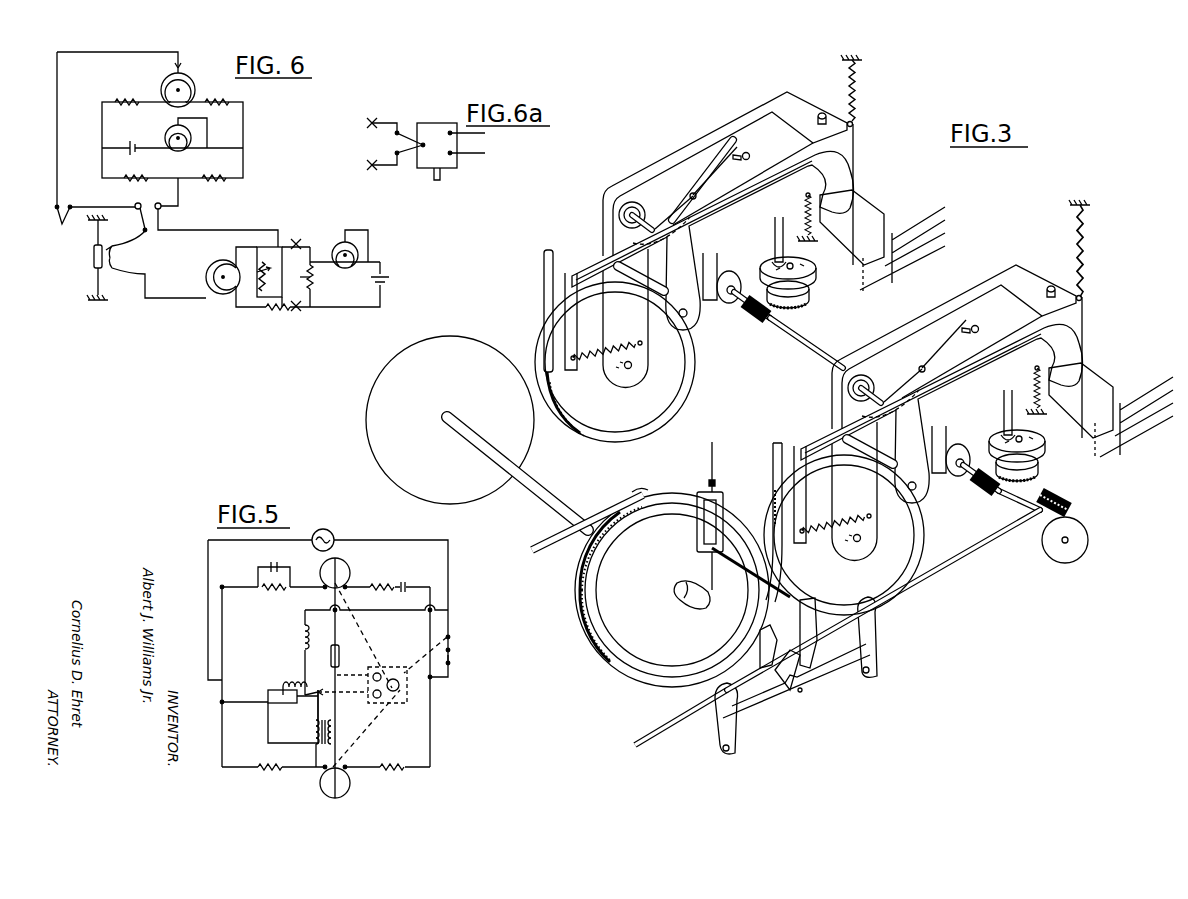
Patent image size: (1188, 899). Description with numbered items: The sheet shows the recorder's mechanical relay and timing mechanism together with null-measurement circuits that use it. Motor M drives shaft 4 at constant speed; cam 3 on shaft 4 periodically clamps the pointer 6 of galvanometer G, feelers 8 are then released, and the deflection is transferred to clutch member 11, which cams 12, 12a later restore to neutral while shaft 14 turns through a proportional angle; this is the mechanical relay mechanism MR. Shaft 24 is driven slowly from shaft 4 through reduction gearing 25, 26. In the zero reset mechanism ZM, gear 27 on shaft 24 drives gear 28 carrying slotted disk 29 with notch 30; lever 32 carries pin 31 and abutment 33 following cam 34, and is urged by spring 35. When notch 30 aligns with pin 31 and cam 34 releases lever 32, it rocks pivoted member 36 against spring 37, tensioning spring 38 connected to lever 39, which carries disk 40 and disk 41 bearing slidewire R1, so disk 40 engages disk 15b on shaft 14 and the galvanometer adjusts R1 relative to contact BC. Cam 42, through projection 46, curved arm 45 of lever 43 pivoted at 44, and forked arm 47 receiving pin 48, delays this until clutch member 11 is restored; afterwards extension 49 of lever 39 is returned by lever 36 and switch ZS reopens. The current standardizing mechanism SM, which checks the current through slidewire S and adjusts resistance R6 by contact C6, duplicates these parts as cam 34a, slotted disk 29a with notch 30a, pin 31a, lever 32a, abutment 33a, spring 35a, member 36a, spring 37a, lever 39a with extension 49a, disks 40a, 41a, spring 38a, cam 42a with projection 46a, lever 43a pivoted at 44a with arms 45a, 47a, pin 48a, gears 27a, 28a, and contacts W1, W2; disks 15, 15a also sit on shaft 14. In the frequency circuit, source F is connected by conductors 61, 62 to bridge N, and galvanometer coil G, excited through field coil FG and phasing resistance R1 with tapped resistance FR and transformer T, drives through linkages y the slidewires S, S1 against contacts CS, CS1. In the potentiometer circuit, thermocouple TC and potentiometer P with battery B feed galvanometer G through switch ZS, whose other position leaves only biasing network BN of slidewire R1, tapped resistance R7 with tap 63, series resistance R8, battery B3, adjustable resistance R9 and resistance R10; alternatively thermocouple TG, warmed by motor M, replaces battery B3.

In FIG. 6, the contact CS is at (184, 76).
In FIG. 5, the contact CS is at (347, 568).
In FIG. 3, the contact CS is at (598, 513).
In FIG. 6, the slidewire S is at (193, 91).
In FIG. 5, the slidewire S is at (322, 572).
In FIG. 3, the slidewire S is at (580, 612).
In FIG. 6, the split-circuit potentiometer P is at (194, 134).
In FIG. 6, the battery B is at (140, 152).
In FIG. 6, the thermocouple TC is at (60, 227).
In FIG. 6, the switch ZS is at (202, 227).
In FIG. 5, the switch ZS is at (461, 650).
In FIG. 3, the switch ZS is at (898, 235).
In FIG. 6, the galvanometer G is at (105, 258).
In FIG. 5, the galvanometer G is at (341, 653).
In FIG. 3, the galvanometer G is at (697, 530).
In FIG. 6, the contact BC is at (212, 292).
In FIG. 5, the contact BC is at (272, 692).
In FIG. 3, the contact BC is at (544, 264).
In FIG. 6, the biasing resistance R1 is at (225, 295).
In FIG. 5, the biasing resistance R1 is at (288, 680).
In FIG. 3, the biasing resistance R1 is at (563, 418).
In FIG. 6, the biasing network BN is at (243, 300).
In FIG. 6, the tap 63 is at (283, 277).
In FIG. 6, the tapped resistance R7 is at (266, 283).
In FIG. 6, the resistance R8 is at (296, 312).
In FIG. 6, the adjustable resistance R9 is at (339, 244).
In FIG. 6, the resistance R10 is at (323, 277).
In FIG. 6, the battery B3 is at (386, 280).
In FIG. 6A, the motor M is at (433, 123).
In FIG. 6A, the thermocouple TG is at (407, 158).
In FIG. 5, the AC source F is at (328, 532).
In FIG. 5, the conductor 61 is at (208, 580).
In FIG. 5, the conductor 62 is at (449, 592).
In FIG. 5, the frequency-responsive bridge N is at (243, 610).
In FIG. 5, the field coil FG is at (305, 626).
In FIG. 5, the pointer 6 is at (335, 656).
In FIG. 3, the pointer 6 is at (752, 572).
In FIG. 5, the resistance FR is at (293, 716).
In FIG. 5, the transformer T is at (322, 742).
In FIG. 5, the mechanical relay mechanism MR is at (390, 703).
In FIG. 3, the mechanical relay mechanism MR is at (848, 721).
In FIG. 5, the cam 3 is at (337, 702).
In FIG. 3, the cam 3 is at (780, 676).
In FIG. 5, the mechanical link y is at (362, 632).
In FIG. 5, the contact CS1 is at (328, 794).
In FIG. 5, the slidewire S1 is at (350, 790).
In FIG. 3, the zero reset mechanism ZM is at (680, 114).
In FIG. 3, the current standardizing mechanism SM is at (903, 327).
In FIG. 3, the extension 49 is at (808, 110).
In FIG. 3, the biasing spring 37 is at (856, 104).
In FIG. 3, the pivoted member 36 is at (857, 150).
In FIG. 3, the lever 32 is at (840, 172).
In FIG. 3, the cam 42 is at (629, 201).
In FIG. 3, the projection 46 is at (644, 200).
In FIG. 3, the curved arm 45 is at (622, 240).
In FIG. 3, the forked arm 47 is at (733, 137).
In FIG. 3, the pin 48 is at (750, 156).
In FIG. 3, the lever 43 is at (703, 175).
In FIG. 3, the pivot 44 is at (692, 192).
In FIG. 3, the spring 38 is at (593, 370).
In FIG. 3, the lever 39 is at (646, 332).
In FIG. 3, the disk 40 is at (638, 438).
In FIG. 3, the disk 41 is at (666, 413).
In FIG. 3, the abutment 33 is at (718, 262).
In FIG. 3, the pin 31 is at (778, 239).
In FIG. 3, the notch 30 is at (772, 266).
In FIG. 3, the cam 34 is at (729, 303).
In FIG. 3, the gear 27 is at (752, 318).
In FIG. 3, the slotted disk 29 is at (814, 268).
In FIG. 3, the gear 28 is at (805, 306).
In FIG. 3, the shaft 24 is at (1005, 500).
In FIG. 3, the spring 35 is at (814, 228).
In FIG. 3, the disk 15b is at (487, 353).
In FIG. 3, the shaft 14 is at (538, 500).
In FIG. 3, the disc 15a is at (645, 662).
In FIG. 3, the drum 15 is at (586, 625).
In FIG. 3, the contact lever C6 is at (780, 450).
In FIG. 3, the resistance R6 is at (773, 498).
In FIG. 3, the clutch member 11 is at (770, 704).
In FIG. 3, the cam 12 is at (714, 724).
In FIG. 3, the cam 12a is at (876, 632).
In FIG. 3, the shaft 4 is at (947, 566).
In FIG. 3, the feeler 8 is at (766, 650).
In FIG. 3, the contact W1 is at (1150, 400).
In FIG. 3, the contact W2 is at (1140, 440).
In FIG. 3, the reduction gearing 26 is at (1082, 528).
In FIG. 3, the reduction gearing 25 is at (1066, 495).
In FIG. 3, the extension 49a is at (1030, 285).
In FIG. 3, the biasing spring 37a is at (1083, 260).
In FIG. 3, the pivoted member 36a is at (982, 342).
In FIG. 3, the lever 32a is at (1070, 350).
In FIG. 3, the cam 42a is at (856, 372).
In FIG. 3, the projection 46a is at (858, 387).
In FIG. 3, the curved arm 45a is at (852, 416).
In FIG. 3, the pin 48a is at (973, 320).
In FIG. 3, the lever 43a is at (940, 320).
In FIG. 3, the pivot 44a is at (923, 360).
In FIG. 3, the spring 38a is at (858, 512).
In FIG. 3, the lever 39a is at (878, 524).
In FIG. 3, the disk 40a is at (844, 535).
In FIG. 3, the disk 41a is at (844, 535).
In FIG. 3, the abutment 33a is at (948, 432).
In FIG. 3, the pin 31a is at (1006, 410).
In FIG. 3, the notch 30a is at (1020, 432).
In FIG. 3, the cam 34a is at (955, 473).
In FIG. 3, the gear 27a is at (975, 490).
In FIG. 3, the slotted disk 29a is at (1040, 440).
In FIG. 3, the gear 28a is at (1040, 478).
In FIG. 3, the spring 35a is at (1040, 395).